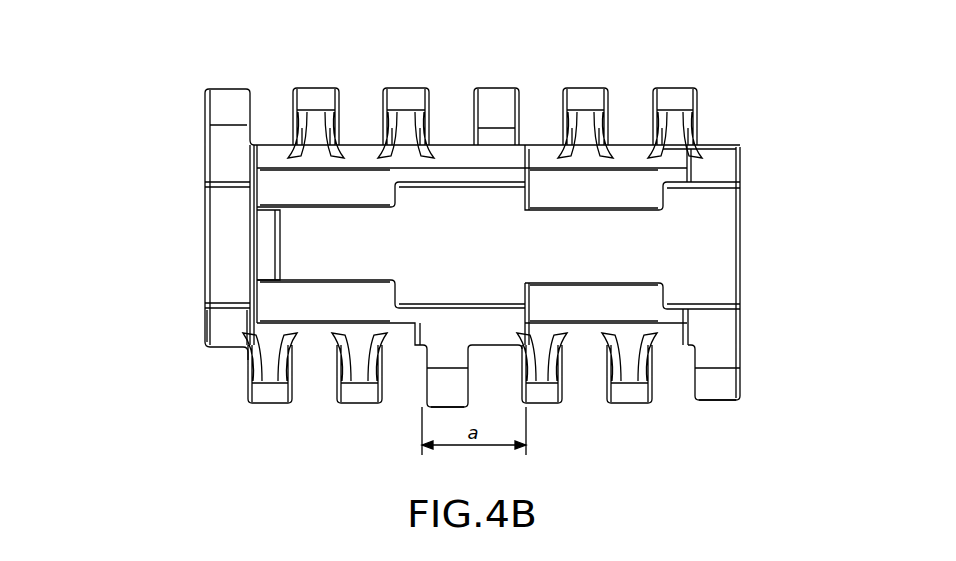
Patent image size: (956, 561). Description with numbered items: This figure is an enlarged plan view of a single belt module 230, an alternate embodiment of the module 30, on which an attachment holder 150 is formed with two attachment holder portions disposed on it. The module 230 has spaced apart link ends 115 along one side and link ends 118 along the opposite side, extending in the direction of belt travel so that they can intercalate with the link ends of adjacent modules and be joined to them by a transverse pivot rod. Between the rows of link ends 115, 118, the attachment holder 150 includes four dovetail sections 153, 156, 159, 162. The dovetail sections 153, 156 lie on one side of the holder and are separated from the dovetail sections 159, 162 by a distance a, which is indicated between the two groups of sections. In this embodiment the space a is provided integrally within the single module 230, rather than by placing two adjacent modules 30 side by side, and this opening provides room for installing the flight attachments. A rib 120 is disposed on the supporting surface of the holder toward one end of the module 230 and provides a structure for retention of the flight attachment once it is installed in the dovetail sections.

The module 30 is at (165, 88).
The attachment holder 150 is at (152, 164).
The link end 115 is at (322, 95).
The link end 118 is at (276, 398).
The rib 120 is at (267, 235).
The dovetail section 153 is at (365, 198).
The dovetail section 156 is at (370, 290).
The dovetail section 159 is at (617, 192).
The dovetail section 162 is at (610, 303).
The module 230 is at (227, 328).